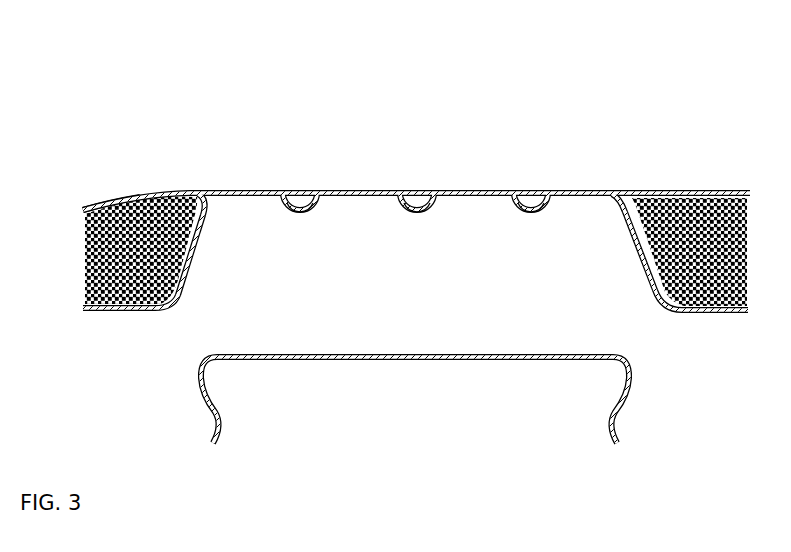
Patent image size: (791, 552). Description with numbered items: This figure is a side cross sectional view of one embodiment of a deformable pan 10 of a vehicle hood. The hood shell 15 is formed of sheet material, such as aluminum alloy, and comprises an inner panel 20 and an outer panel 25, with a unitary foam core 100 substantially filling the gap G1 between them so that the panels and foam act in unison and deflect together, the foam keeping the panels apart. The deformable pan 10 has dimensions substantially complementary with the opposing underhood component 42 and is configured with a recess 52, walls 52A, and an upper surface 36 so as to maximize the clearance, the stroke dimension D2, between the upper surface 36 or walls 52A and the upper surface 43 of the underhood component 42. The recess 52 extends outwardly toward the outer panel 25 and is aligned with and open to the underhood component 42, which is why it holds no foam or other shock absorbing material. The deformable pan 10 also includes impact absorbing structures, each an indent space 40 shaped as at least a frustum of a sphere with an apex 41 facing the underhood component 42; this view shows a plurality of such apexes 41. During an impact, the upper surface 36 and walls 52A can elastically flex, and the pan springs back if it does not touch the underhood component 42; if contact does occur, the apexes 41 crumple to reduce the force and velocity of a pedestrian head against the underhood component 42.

The hood shell 15 is at (394, 241).
The outer panel 25 is at (394, 235).
The deformable pan 10 is at (335, 214).
The inner panel 20 is at (140, 270).
The unitary foam core 100 is at (404, 213).
The gap G1 is at (110, 212).
The upper surface 36 is at (238, 197).
The recess 52 is at (415, 279).
The walls 52A is at (416, 273).
The indent space 40 is at (307, 186).
The apex 41 is at (299, 214).
The stroke dimension D2 is at (357, 210).
The underhood component 42 is at (415, 369).
The upper surface of the underhood component 43 is at (300, 354).